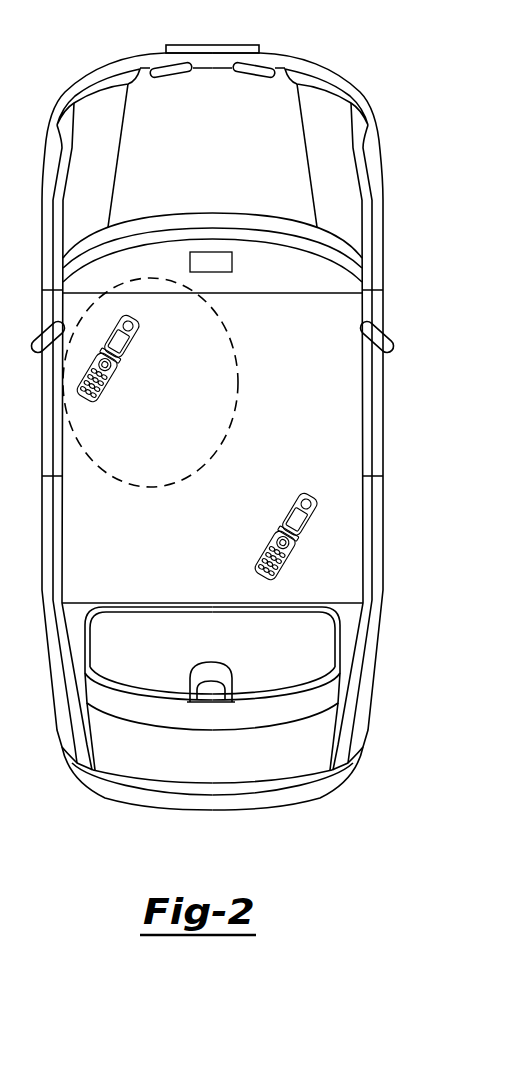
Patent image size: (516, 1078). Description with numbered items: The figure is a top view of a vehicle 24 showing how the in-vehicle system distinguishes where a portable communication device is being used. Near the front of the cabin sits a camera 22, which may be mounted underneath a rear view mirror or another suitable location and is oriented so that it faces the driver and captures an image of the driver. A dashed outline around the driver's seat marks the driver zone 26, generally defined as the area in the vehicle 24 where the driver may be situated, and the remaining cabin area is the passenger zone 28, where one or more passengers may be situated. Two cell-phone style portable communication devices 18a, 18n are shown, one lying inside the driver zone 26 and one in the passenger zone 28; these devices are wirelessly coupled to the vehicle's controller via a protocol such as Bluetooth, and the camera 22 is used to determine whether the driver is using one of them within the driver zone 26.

The vehicle 24 is at (338, 72).
The camera 22 is at (232, 262).
The driver zone 26 is at (240, 377).
The portable communication device 18a is at (118, 377).
The portable communication device 18n is at (288, 568).
The passenger zone 28 is at (217, 521).